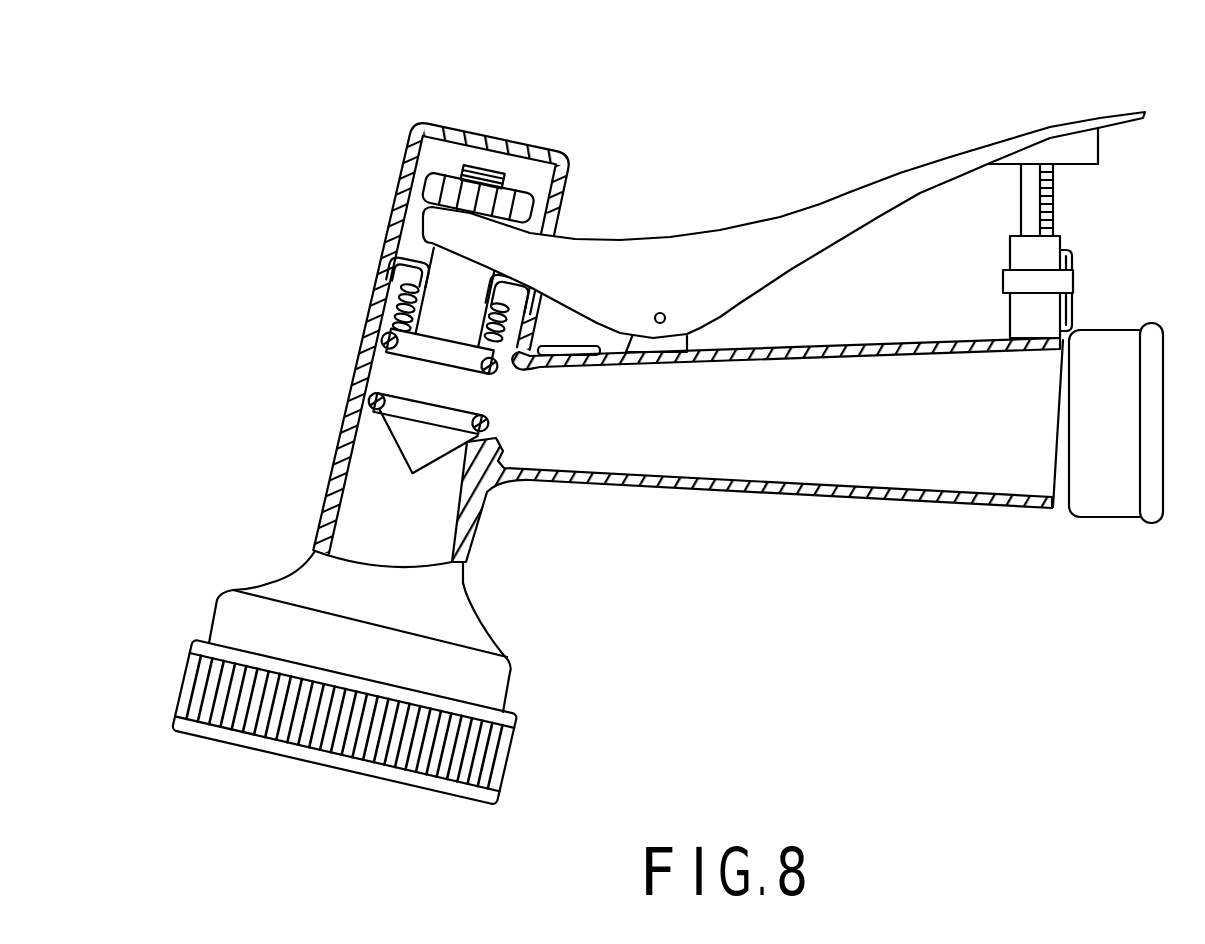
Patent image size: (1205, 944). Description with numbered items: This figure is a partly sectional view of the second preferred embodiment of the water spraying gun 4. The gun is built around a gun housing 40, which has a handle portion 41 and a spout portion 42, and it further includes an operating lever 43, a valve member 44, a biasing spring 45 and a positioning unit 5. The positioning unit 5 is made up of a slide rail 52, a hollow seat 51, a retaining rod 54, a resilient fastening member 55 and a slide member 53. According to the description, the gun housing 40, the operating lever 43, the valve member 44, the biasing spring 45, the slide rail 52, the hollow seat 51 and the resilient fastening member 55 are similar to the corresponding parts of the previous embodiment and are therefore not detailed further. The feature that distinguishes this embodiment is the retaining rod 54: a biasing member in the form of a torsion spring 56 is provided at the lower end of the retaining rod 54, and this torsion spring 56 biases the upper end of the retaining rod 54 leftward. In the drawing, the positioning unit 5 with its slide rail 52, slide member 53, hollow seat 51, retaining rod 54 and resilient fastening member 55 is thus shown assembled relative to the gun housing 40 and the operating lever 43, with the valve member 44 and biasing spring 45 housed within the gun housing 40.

The water spraying gun 4 is at (738, 311).
The gun housing 40 is at (760, 490).
The handle portion 41 is at (927, 495).
The spout portion 42 is at (512, 673).
The operating lever 43 is at (902, 176).
The valve member 44 is at (472, 310).
The biasing spring 45 is at (405, 300).
The positioning unit 5 is at (1063, 233).
The hollow seat 51 is at (1010, 252).
The slide rail 52 is at (1100, 143).
The slide member 53 is at (1020, 200).
The retaining rod 54 is at (1070, 258).
The resilient fastening member 55 is at (1073, 284).
The torsion spring 56 is at (1068, 320).